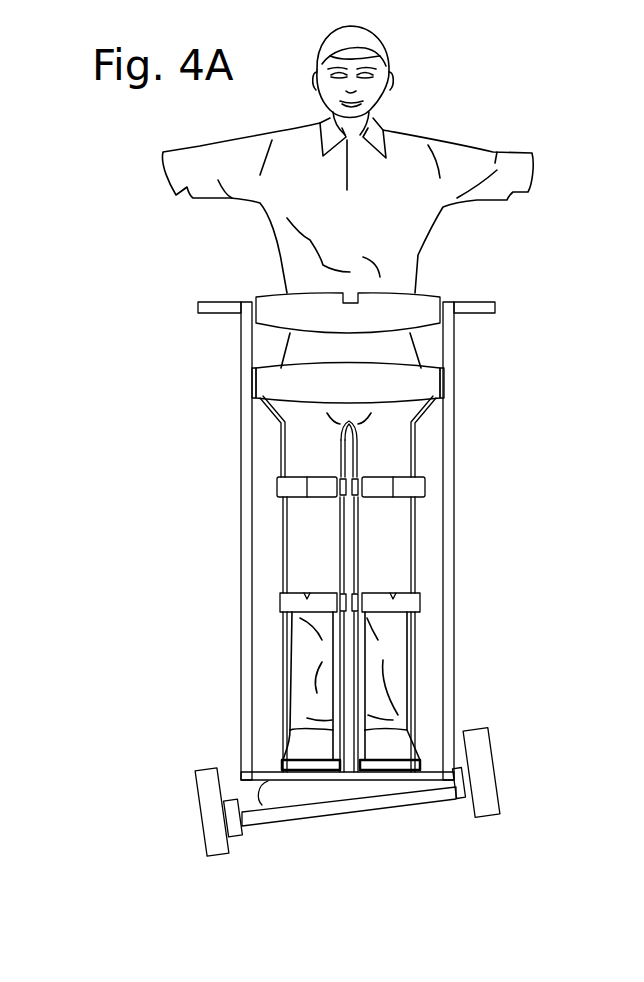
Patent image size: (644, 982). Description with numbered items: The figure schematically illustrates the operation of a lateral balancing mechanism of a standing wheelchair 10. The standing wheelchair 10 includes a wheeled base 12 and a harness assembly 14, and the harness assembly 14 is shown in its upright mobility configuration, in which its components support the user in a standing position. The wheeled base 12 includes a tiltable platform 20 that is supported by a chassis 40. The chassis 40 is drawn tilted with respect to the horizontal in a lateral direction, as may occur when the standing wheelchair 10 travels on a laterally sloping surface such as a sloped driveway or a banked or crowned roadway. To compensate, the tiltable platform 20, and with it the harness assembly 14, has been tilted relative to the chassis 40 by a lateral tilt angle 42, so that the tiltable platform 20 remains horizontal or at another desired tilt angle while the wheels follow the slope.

The standing wheelchair 10 is at (538, 259).
The harness assembly 14 is at (198, 423).
The wheeled base 12 is at (489, 692).
The tiltable platform 20 is at (242, 758).
The chassis 40 is at (328, 812).
The lateral tilt angle 42 is at (262, 804).